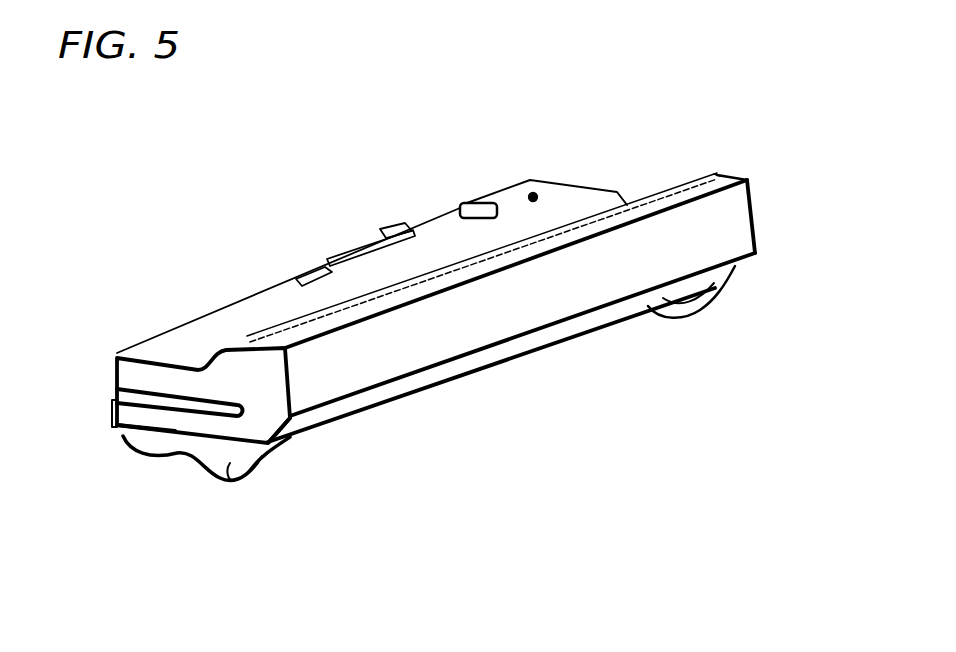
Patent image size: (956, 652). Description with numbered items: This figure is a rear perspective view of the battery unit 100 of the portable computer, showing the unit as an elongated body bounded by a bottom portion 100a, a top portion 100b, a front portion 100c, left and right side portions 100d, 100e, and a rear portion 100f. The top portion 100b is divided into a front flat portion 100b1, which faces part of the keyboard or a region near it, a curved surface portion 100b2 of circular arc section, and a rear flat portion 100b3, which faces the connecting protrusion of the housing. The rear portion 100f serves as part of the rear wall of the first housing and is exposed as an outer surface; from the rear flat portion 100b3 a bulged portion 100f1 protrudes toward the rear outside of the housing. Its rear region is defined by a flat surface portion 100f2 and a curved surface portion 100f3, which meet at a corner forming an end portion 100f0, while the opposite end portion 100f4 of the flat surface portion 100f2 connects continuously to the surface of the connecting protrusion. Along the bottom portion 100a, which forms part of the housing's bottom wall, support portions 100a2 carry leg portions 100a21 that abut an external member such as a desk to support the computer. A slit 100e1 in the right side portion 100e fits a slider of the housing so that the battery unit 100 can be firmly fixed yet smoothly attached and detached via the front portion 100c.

The battery unit 100 is at (526, 126).
The bottom portion 100a is at (443, 378).
The support portions 100a2 is at (215, 464).
The leg portions 100a21 is at (245, 476).
The top portion 100b is at (287, 313).
The front flat portion 100b1 is at (433, 238).
The curved surface portion 100b2 is at (588, 213).
The rear flat portion 100b3 is at (683, 193).
The front portion 100c is at (110, 372).
The left side portion 100d is at (623, 197).
The right side portion 100e is at (177, 423).
The slit 100e1 is at (125, 441).
The rear portion 100f is at (733, 223).
The end portion 100f0 is at (346, 399).
The bulged portion 100f1 is at (746, 266).
The flat surface portion 100f2 is at (568, 287).
The curved surface portion 100f3 is at (490, 354).
The end portion 100f4 is at (715, 179).